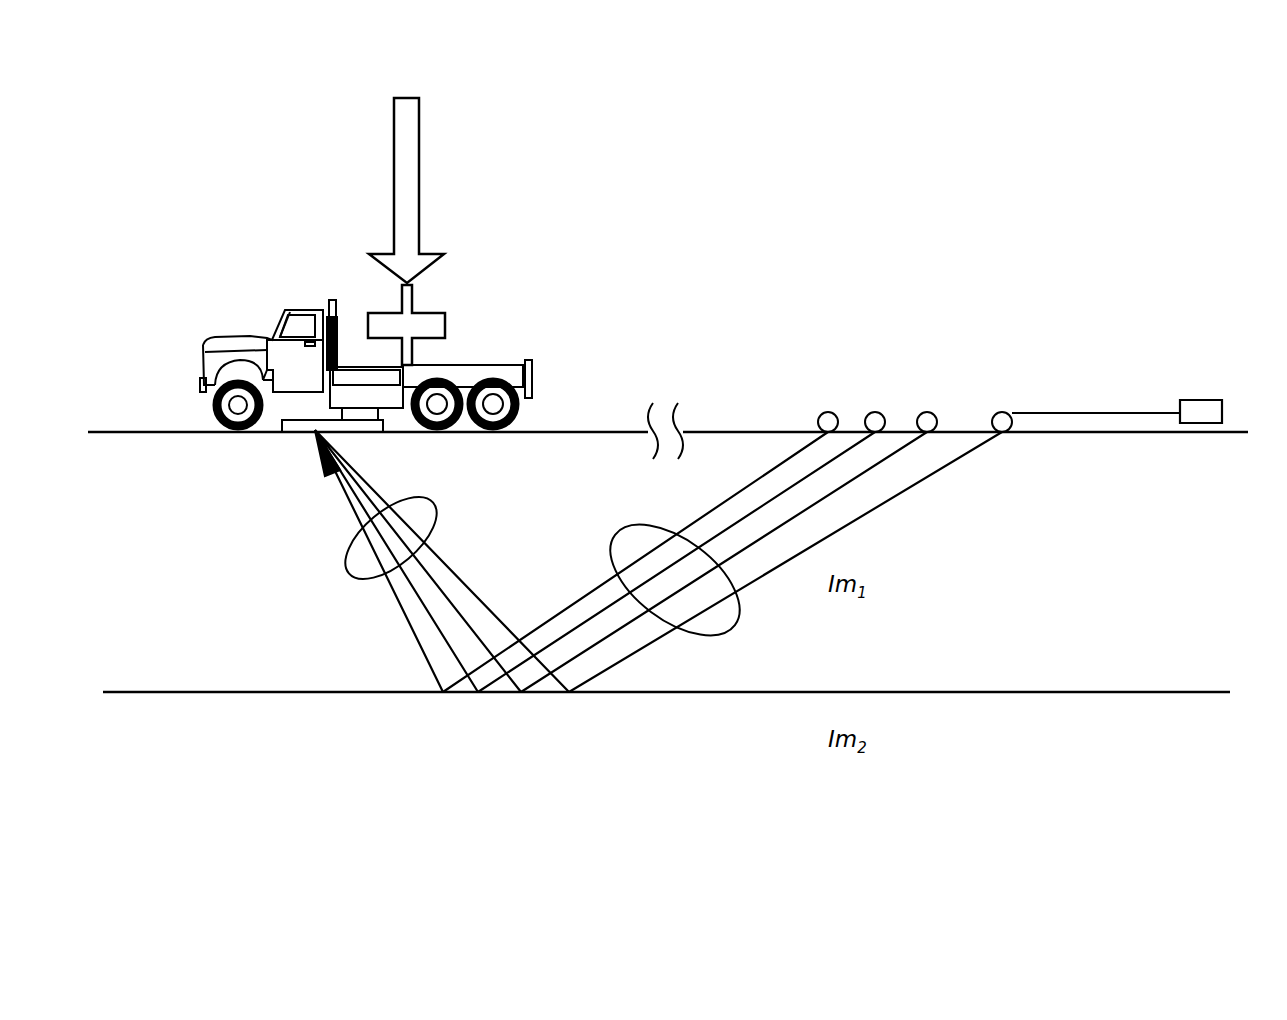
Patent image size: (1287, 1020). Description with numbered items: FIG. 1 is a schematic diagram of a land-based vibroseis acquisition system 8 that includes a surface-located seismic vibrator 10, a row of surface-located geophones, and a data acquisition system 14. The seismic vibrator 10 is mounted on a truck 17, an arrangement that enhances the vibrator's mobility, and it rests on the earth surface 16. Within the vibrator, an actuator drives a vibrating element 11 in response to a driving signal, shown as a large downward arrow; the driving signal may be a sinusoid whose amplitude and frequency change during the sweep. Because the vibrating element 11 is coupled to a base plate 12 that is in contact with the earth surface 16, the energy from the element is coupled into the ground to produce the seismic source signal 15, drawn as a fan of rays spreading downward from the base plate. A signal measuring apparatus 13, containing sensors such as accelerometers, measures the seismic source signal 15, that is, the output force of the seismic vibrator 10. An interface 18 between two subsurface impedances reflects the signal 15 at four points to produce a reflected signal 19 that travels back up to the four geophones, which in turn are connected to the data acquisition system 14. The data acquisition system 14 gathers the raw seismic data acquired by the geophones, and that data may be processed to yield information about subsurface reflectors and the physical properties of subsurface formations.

The vibroseis acquisition system 8 is at (957, 337).
The seismic vibrator 10 is at (178, 292).
The vibrating element 11 is at (443, 311).
The base plate 12 is at (300, 421).
The signal measuring apparatus 13 is at (367, 432).
The data acquisition system 14 is at (1205, 400).
The seismic source signal 15 is at (347, 573).
The earth surface 16 is at (154, 432).
The truck 17 is at (308, 308).
The interface 18 is at (1080, 692).
The reflected signal 19 is at (737, 625).